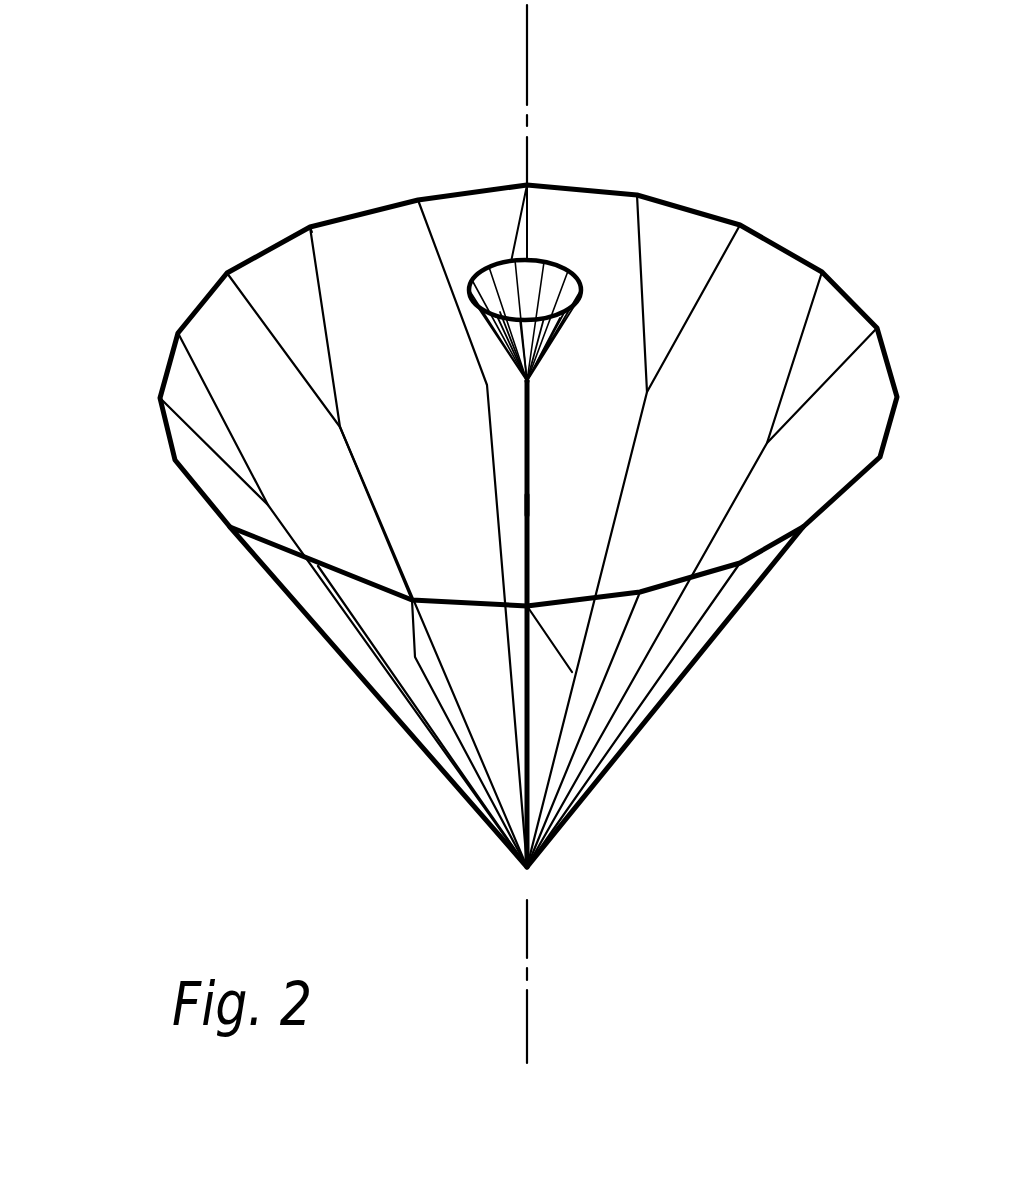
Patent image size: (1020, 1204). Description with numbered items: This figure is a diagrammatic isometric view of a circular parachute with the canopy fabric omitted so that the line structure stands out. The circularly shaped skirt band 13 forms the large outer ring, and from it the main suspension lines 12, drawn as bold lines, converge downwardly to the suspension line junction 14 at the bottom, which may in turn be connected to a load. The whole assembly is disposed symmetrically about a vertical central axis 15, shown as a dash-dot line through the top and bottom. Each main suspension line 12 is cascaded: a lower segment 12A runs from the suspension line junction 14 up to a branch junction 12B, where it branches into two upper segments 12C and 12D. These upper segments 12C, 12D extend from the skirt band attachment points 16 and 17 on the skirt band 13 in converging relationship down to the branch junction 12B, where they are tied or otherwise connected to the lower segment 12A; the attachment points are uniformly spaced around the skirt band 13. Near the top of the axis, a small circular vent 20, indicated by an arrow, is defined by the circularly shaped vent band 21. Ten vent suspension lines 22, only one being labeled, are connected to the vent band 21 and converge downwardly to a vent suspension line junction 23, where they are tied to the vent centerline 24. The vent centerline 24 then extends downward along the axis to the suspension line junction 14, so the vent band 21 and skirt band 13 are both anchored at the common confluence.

The main suspension line 12 is at (356, 466).
The lower segment 12A is at (450, 700).
The branch junction 12B is at (340, 427).
The upper segment 12C is at (251, 307).
The upper segment 12D is at (318, 274).
The skirt band 13 is at (472, 190).
The suspension line junction 14 is at (533, 868).
The vertical central axis 15 is at (527, 40).
The skirt band attachment point 16 is at (227, 273).
The skirt band attachment point 17 is at (309, 226).
The vent 20 is at (537, 258).
The vent band 21 is at (573, 267).
The vent suspension line 22 is at (553, 345).
The vent suspension line junction 23 is at (527, 381).
The vent centerline 24 is at (530, 505).